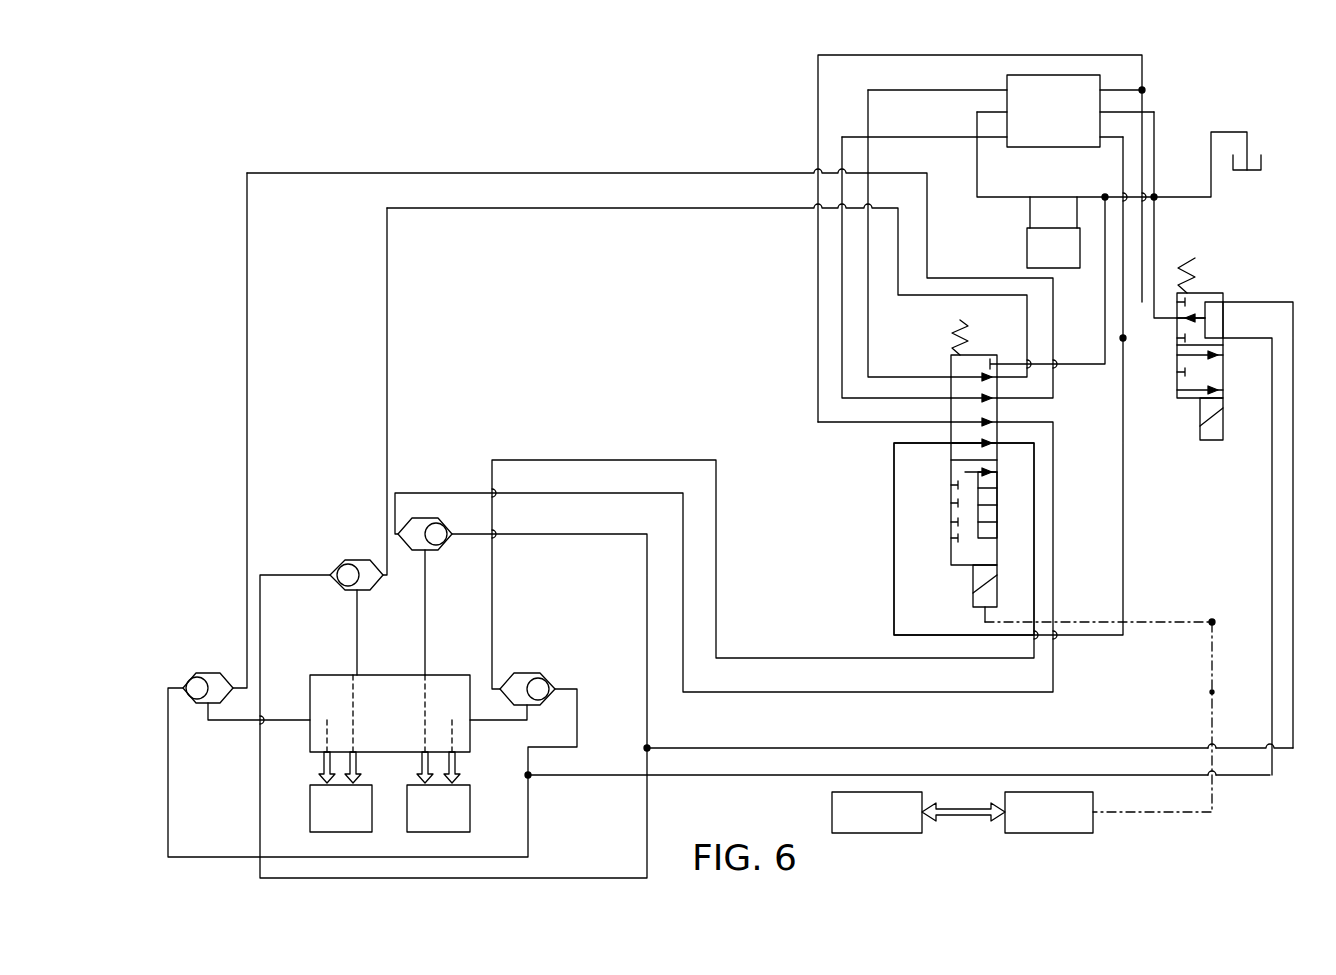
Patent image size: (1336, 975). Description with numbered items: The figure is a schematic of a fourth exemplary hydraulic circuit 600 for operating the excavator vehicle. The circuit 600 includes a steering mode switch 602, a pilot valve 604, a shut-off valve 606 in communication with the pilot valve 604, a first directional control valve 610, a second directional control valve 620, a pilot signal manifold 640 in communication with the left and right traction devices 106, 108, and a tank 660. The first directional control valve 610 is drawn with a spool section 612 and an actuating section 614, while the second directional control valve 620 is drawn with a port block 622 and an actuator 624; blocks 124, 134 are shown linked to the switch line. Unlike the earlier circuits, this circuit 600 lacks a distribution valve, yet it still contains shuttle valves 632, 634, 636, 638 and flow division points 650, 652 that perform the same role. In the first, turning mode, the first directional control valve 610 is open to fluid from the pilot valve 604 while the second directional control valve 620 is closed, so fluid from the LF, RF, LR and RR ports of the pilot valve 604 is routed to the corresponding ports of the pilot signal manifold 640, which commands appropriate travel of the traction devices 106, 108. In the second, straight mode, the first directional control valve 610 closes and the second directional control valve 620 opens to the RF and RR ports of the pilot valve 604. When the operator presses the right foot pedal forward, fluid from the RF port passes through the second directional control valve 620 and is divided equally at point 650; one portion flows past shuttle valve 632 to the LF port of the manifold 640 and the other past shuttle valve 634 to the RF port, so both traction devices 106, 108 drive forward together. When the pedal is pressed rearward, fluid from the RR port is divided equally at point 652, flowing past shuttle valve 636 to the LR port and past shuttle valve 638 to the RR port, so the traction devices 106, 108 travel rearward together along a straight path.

The hydraulic circuit 600 is at (1172, 98).
The steering mode switch 602 is at (1216, 690).
The pilot valve 604 is at (1067, 124).
The shut-off valve 606 is at (1067, 259).
The first directional control valve 610 is at (943, 538).
The directional control valve 612 is at (949, 368).
The proportional solenoid section 614 is at (953, 465).
The second directional control valve 620 is at (1174, 410).
The valve port block 622 is at (1216, 298).
The solenoid actuator 624 is at (1216, 383).
The shuttle valve 632 is at (354, 558).
The shuttle valve 634 is at (432, 552).
The shuttle valve 636 is at (207, 672).
The shuttle valve 638 is at (527, 672).
The pilot signal manifold 640 is at (401, 728).
The flow division point 650 is at (650, 748).
The flow division point 652 is at (531, 777).
The tank 660 is at (1262, 163).
The left traction device 106 is at (355, 819).
The right traction device 108 is at (452, 819).
The controller 124 is at (891, 823).
The valve controller 134 is at (1063, 823).